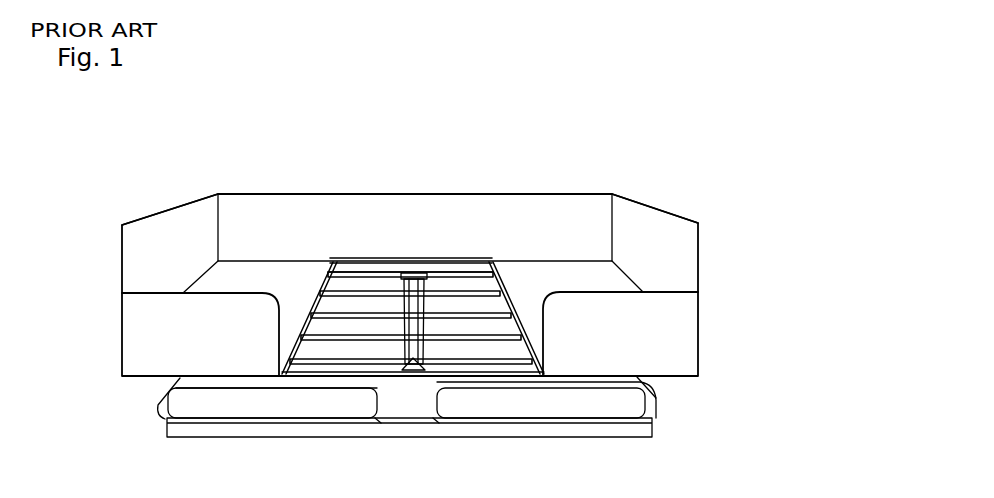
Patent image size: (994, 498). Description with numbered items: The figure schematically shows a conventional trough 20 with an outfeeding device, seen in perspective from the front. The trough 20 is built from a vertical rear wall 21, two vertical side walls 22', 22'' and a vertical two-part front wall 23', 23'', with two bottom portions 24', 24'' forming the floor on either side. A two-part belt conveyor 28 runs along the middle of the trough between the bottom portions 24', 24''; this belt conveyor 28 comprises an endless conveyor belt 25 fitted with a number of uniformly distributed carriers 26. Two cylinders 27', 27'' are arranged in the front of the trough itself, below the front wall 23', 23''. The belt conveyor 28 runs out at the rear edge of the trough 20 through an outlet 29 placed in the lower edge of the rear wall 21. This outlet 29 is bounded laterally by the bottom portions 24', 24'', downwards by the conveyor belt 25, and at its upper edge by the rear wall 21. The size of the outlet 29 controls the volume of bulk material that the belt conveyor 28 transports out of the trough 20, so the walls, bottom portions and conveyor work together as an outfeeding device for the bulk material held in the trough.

The trough 20 is at (482, 166).
The rear wall 21 is at (320, 227).
The side wall 22' is at (170, 183).
The side wall 22'' is at (655, 178).
The front wall part 23' is at (159, 315).
The front wall part 23'' is at (665, 309).
The bottom portion 24' is at (230, 185).
The bottom portion 24'' is at (586, 189).
The conveyor belt 25 is at (447, 302).
The carrier 26 is at (447, 337).
The cylinder 27' is at (267, 431).
The cylinder 27'' is at (546, 429).
The belt conveyor 28 is at (380, 278).
The outlet 29 is at (443, 267).